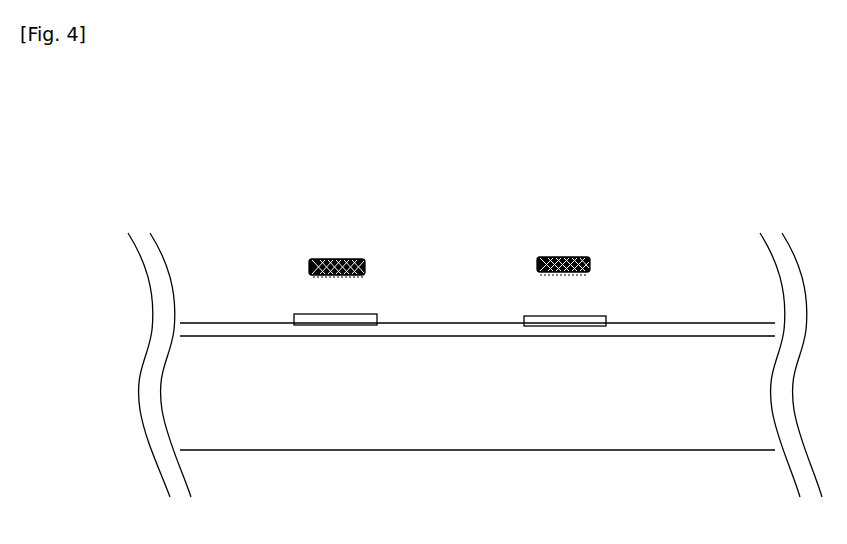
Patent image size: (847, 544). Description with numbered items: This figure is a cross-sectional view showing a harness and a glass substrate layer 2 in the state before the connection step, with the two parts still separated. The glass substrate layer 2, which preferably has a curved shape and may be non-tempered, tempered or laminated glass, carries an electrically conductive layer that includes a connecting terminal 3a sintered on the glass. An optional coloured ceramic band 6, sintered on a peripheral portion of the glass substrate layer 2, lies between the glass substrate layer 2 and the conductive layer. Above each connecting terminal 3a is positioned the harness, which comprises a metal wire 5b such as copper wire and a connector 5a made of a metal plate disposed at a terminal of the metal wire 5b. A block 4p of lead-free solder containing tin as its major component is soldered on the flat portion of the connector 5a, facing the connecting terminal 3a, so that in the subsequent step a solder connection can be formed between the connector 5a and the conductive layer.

The glass substrate layer 2 is at (456, 432).
The connecting terminal 3a is at (369, 318).
The block 4p is at (307, 270).
The connector 5a is at (365, 263).
The metal wire 5b is at (332, 260).
The coloured ceramic band 6 is at (335, 333).